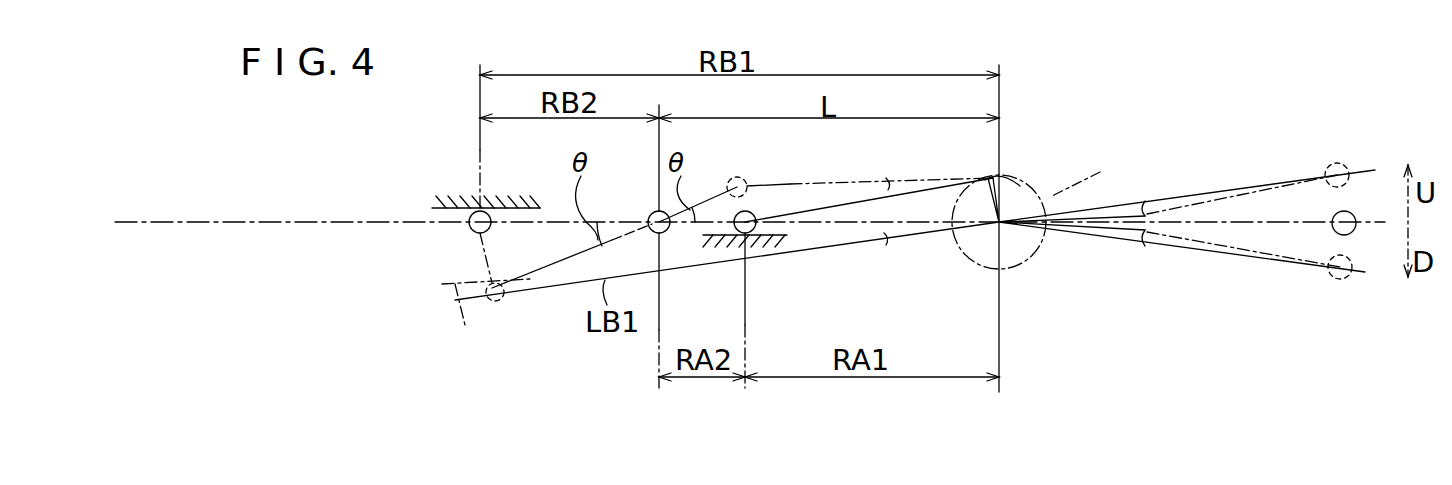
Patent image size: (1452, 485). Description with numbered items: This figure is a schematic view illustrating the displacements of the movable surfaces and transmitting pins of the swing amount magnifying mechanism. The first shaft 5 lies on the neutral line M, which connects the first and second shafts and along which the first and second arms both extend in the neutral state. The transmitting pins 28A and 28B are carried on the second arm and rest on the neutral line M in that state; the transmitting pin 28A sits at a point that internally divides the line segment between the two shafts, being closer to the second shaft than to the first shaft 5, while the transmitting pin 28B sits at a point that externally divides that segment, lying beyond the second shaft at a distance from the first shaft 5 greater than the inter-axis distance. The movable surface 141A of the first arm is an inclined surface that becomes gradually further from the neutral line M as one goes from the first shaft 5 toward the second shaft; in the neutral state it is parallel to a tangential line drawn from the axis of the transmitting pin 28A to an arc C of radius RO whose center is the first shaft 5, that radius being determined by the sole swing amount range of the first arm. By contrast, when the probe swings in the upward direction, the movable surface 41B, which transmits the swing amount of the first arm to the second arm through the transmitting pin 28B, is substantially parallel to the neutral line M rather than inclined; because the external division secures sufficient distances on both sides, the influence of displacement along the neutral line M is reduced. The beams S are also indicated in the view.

The first shaft 5 is at (1035, 255).
The transmitting pin 28A is at (737, 177).
The transmitting pin 28B is at (478, 208).
The movable surface 41B is at (470, 224).
The movable surface 141A is at (782, 193).
The neutral line M is at (1368, 222).
The light beam S is at (890, 183).
The arc C is at (1100, 172).
The radius RO is at (1015, 183).